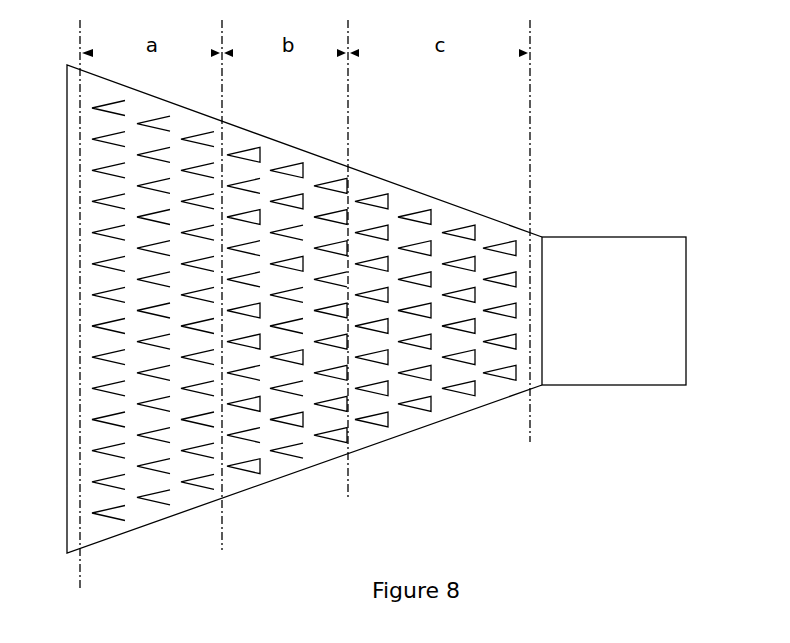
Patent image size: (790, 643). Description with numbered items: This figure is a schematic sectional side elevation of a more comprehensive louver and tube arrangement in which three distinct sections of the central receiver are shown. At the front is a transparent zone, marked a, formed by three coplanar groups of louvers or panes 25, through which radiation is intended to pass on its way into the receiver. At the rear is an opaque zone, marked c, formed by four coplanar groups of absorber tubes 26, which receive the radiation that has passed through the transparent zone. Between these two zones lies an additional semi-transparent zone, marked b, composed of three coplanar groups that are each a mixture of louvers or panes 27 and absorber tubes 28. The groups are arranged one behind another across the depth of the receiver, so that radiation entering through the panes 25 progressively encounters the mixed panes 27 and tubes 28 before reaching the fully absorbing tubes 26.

The louvers or panes 25 is at (202, 485).
The absorber tubes 26 is at (435, 344).
The louvers or panes 27 is at (288, 383).
The absorber tubes 28 is at (287, 349).